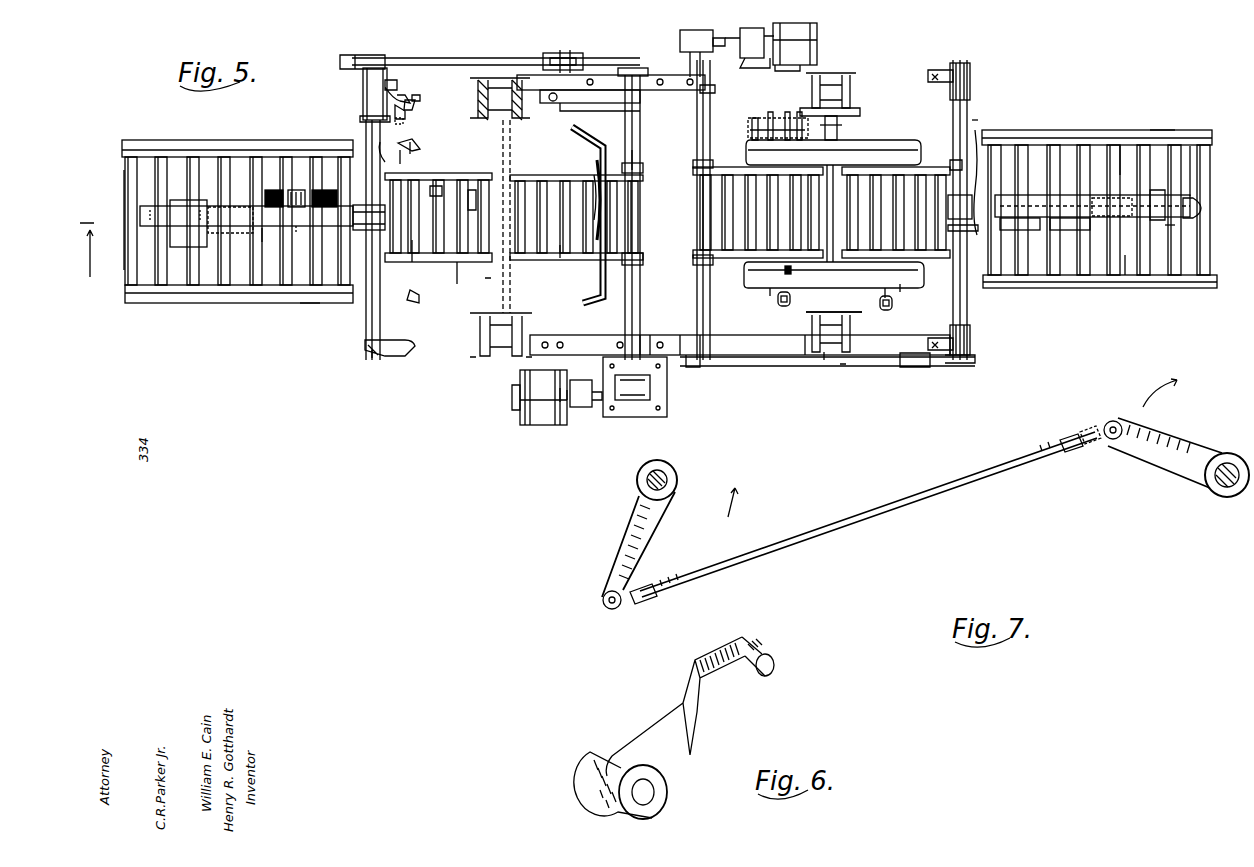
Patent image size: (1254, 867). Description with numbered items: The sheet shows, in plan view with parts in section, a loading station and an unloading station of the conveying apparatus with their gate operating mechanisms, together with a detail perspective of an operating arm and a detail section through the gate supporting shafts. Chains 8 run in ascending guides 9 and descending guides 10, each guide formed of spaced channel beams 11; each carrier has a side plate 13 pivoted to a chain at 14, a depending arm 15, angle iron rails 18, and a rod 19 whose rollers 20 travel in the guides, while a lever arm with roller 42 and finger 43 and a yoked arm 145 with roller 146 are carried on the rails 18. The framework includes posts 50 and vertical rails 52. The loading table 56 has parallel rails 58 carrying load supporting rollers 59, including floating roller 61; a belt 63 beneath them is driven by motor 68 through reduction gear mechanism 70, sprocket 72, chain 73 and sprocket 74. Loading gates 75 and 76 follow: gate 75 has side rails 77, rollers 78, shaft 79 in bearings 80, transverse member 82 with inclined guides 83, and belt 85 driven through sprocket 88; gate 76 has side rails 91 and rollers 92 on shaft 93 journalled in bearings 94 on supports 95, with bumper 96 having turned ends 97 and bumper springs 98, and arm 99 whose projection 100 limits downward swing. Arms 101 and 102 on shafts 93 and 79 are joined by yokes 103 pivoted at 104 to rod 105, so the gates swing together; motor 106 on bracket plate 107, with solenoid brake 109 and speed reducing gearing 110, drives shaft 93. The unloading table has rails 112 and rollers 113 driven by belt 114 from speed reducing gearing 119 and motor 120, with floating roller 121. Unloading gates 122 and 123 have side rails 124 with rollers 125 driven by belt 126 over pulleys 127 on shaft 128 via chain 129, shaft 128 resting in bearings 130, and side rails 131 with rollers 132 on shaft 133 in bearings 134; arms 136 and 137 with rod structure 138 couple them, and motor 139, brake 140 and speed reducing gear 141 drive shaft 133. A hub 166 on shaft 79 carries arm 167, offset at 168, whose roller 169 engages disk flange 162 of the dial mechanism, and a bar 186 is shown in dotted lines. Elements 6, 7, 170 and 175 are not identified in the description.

In FIG. 5, the conveyor section 6 is at (213, 134).
In FIG. 5, the conveyor section 7 is at (437, 161).
In FIG. 5, the chains 8 is at (838, 377).
In FIG. 5, the guides 9 is at (489, 68).
In FIG. 5, the guides 10 is at (855, 76).
In FIG. 5, the channel beams 11 is at (851, 95).
In FIG. 5, the side plate 13 is at (844, 113).
In FIG. 5, the pivotal connection 14 is at (844, 126).
In FIG. 5, the depending arm 15 is at (848, 314).
In FIG. 5, the angle iron rails 18 is at (895, 142).
In FIG. 5, the rod 19 is at (505, 156).
In FIG. 5, the wheels or rollers 20 is at (506, 132).
In FIG. 5, the roller 42 is at (783, 308).
In FIG. 5, the finger 43 is at (792, 270).
In FIG. 5, the vertical angle iron posts 50 is at (399, 86).
In FIG. 5, the vertical rails 52 is at (944, 84).
In FIG. 5, the loading table 56 is at (295, 305).
In FIG. 5, the parallel rails 58 is at (155, 142).
In FIG. 5, the load supporting rollers 59 is at (242, 165).
In FIG. 5, the floating roller 61 is at (388, 215).
In FIG. 5, the belt 63 is at (268, 233).
In FIG. 5, the motor 68 is at (178, 197).
In FIG. 5, the reduction gear mechanism 70 is at (293, 233).
In FIG. 5, the sprocket 72 is at (272, 188).
In FIG. 5, the chain 73 is at (297, 188).
In FIG. 5, the sprocket 74 is at (315, 188).
In FIG. 5, the loading gate 75 is at (454, 171).
In FIG. 5, the loading gate 76 is at (551, 169).
In FIG. 5, the side rails 77 is at (458, 296).
In FIG. 5, the load supporting rollers 78 is at (472, 178).
In FIG. 5, the shaft 79 is at (401, 145).
In FIG. 7, the shaft 79 is at (659, 463).
In FIG. 5, the bearings 80 is at (361, 88).
In FIG. 5, the transverse member 82 is at (402, 160).
In FIG. 5, the inclined guides 83 is at (410, 148).
In FIG. 5, the belt 85 is at (425, 260).
In FIG. 5, the sprocket 88 is at (382, 152).
In FIG. 5, the side rails 91 is at (592, 173).
In FIG. 5, the rollers 92 is at (560, 258).
In FIG. 5, the shaft 93 is at (640, 143).
In FIG. 7, the shaft 93 is at (1210, 492).
In FIG. 5, the bearings 94 is at (655, 76).
In FIG. 5, the supports 95 is at (688, 333).
In FIG. 5, the transverse bumper 96 is at (640, 160).
In FIG. 5, the inwardly turned ends 97 is at (604, 131).
In FIG. 5, the bumper springs 98 is at (597, 166).
In FIG. 5, the arm 99 is at (572, 110).
In FIG. 5, the projection 100 is at (553, 105).
In FIG. 7, the arm 101 is at (1196, 434).
In FIG. 7, the arm 102 is at (625, 527).
In FIG. 7, the yokes 103 is at (651, 608).
In FIG. 7, the pivotal connections 104 is at (608, 610).
In FIG. 5, the rod 105 is at (437, 60).
In FIG. 7, the rod 105 is at (876, 495).
In FIG. 5, the motor 106 is at (548, 428).
In FIG. 5, the bracket plate 107 is at (544, 357).
In FIG. 5, the solenoid operated brake 109 is at (588, 410).
In FIG. 5, the speed reducing gearing 110 is at (672, 403).
In FIG. 5, the rails 112 is at (1162, 130).
In FIG. 5, the load supporting rollers 113 is at (1120, 151).
In FIG. 5, the belt 114 is at (1127, 276).
In FIG. 5, the speed reducing gearing 119 is at (1068, 199).
In FIG. 5, the motor 120 is at (1167, 230).
In FIG. 5, the floating roller 121 is at (1192, 146).
In FIG. 5, the gate 122 is at (905, 285).
In FIG. 5, the gate 123 is at (768, 288).
In FIG. 5, the side rails 124 is at (930, 252).
In FIG. 5, the rollers 125 is at (926, 171).
In FIG. 5, the belt 126 is at (980, 164).
In FIG. 5, the pulleys 127 is at (963, 213).
In FIG. 5, the shaft 128 is at (961, 128).
In FIG. 5, the chain 129 is at (977, 232).
In FIG. 5, the bearings 130 is at (978, 74).
In FIG. 5, the side rails 131 is at (740, 258).
In FIG. 5, the load supporting rollers 132 is at (733, 167).
In FIG. 5, the shaft 133 is at (748, 122).
In FIG. 5, the bearings 134 is at (714, 90).
In FIG. 5, the arm 136 is at (953, 367).
In FIG. 5, the arm 137 is at (680, 368).
In FIG. 5, the rod structure 138 is at (823, 356).
In FIG. 5, the motor 139 is at (816, 35).
In FIG. 5, the solenoid operated brake 140 is at (746, 50).
In FIG. 5, the speed reducing gear 141 is at (680, 34).
In FIG. 5, the yoked arm 145 is at (885, 300).
In FIG. 5, the roller 146 is at (890, 320).
In FIG. 5, the disk flange 162 is at (392, 120).
In FIG. 5, the hub 166 is at (362, 113).
In FIG. 5, the arm 167 is at (419, 112).
In FIG. 6, the arm 167 is at (664, 716).
In FIG. 5, the offset 168 is at (414, 98).
In FIG. 6, the offset 168 is at (718, 645).
In FIG. 5, the roller 169 is at (441, 98).
In FIG. 6, the roller 169 is at (774, 667).
In FIG. 5, the bar 170 is at (750, 136).
In FIG. 5, the pin 175 is at (762, 119).
In FIG. 5, the bar 186 is at (780, 112).